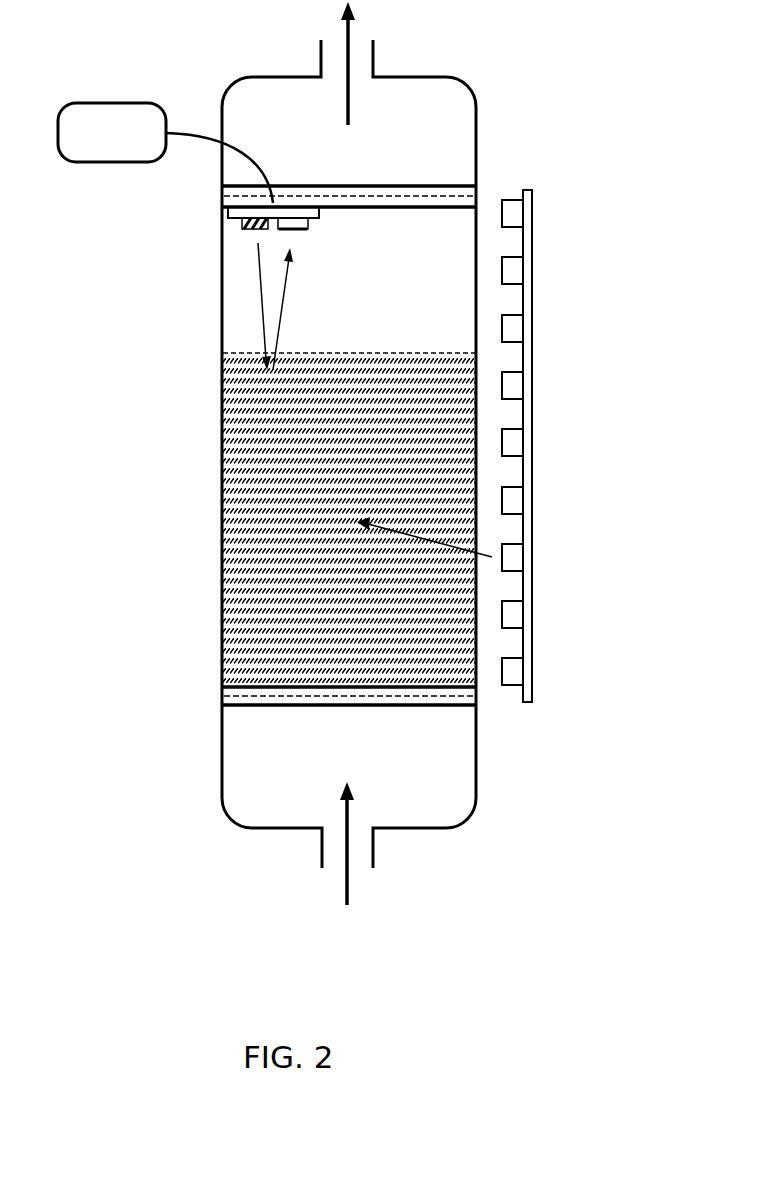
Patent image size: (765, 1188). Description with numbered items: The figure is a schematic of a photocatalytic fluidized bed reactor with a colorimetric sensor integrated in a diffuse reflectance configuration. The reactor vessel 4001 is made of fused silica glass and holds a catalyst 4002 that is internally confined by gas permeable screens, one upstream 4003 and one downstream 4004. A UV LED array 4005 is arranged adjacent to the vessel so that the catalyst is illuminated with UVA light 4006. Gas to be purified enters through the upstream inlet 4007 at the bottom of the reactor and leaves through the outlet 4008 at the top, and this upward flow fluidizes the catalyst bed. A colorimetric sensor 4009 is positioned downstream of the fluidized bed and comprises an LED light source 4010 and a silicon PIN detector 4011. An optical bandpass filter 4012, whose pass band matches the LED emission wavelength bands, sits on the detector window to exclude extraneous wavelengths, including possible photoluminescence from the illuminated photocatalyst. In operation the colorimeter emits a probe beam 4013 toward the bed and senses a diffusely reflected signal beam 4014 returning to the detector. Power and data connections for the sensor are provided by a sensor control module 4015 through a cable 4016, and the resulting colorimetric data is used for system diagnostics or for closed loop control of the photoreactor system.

The reactor vessel 4001 is at (218, 485).
The catalyst 4002 is at (273, 572).
The upstream gas permeable screen 4003 is at (375, 695).
The downstream gas permeable screen 4004 is at (383, 182).
The UV LED array 4005 is at (538, 400).
The UVA light 4006 is at (450, 533).
The upstream inlet 4007 is at (321, 847).
The outlet 4008 is at (375, 63).
The colorimetric sensor 4009 is at (320, 212).
The LED light source 4010 is at (235, 232).
The silicon PIN detector 4011 is at (315, 230).
The optical bandpass filter 4012 is at (300, 233).
The probe beam 4013 is at (250, 315).
The diffusely reflected signal beam 4014 is at (285, 315).
The sensor control module 4015 is at (117, 132).
The cable 4016 is at (196, 128).